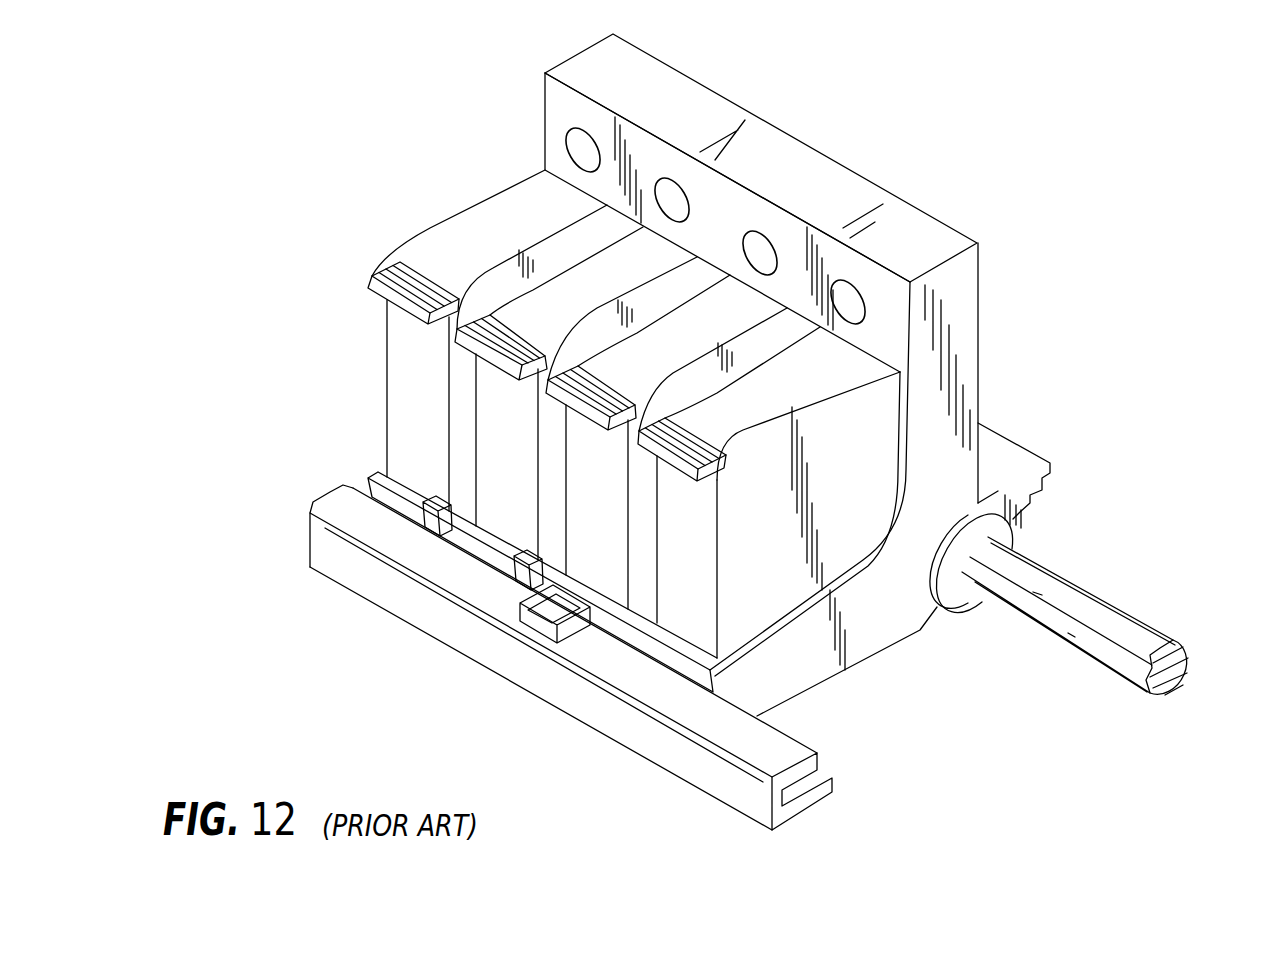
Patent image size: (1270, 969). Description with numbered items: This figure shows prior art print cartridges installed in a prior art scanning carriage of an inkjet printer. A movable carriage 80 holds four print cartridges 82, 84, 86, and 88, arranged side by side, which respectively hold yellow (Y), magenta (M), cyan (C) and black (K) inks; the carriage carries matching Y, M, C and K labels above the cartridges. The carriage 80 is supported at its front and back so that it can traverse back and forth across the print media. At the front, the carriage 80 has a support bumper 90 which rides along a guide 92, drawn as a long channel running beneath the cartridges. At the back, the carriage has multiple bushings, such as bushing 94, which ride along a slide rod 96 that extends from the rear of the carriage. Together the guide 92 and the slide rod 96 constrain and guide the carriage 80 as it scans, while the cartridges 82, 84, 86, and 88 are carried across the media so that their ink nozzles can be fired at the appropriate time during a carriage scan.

The movable carriage 80 is at (862, 657).
The print cartridge 82 is at (458, 240).
The print cartridge 84 is at (583, 275).
The print cartridge 86 is at (710, 297).
The print cartridge 88 is at (845, 358).
The support bumper 90 is at (530, 643).
The guide 92 is at (633, 723).
The bushing 94 is at (1023, 447).
The slide rod 96 is at (1090, 603).